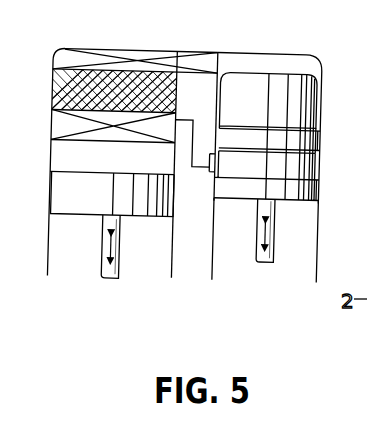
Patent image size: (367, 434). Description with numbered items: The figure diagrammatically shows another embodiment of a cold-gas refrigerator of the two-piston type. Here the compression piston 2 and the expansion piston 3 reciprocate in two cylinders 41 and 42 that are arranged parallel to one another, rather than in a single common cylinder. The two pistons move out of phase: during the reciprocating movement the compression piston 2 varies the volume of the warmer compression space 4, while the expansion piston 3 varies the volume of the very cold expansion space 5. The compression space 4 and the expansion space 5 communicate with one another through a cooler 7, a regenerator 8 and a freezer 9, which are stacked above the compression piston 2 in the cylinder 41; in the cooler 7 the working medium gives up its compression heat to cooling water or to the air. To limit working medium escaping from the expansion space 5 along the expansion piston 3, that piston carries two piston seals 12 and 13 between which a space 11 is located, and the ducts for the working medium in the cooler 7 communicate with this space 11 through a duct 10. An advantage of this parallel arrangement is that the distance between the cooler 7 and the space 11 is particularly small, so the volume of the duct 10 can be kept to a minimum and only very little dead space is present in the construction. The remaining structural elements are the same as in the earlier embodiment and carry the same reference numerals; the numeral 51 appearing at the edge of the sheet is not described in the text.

The compression piston 2 is at (65, 193).
The expansion piston 3 is at (295, 93).
The compression space 4 is at (119, 164).
The expansion space 5 is at (271, 62).
The cooler 7 is at (65, 123).
The regenerator 8 is at (72, 89).
The freezer 9 is at (68, 58).
The duct 10 is at (184, 143).
The space 11 is at (317, 163).
The piston seal 12 is at (317, 140).
The piston seal 13 is at (317, 185).
The cylinder 41 is at (50, 156).
The cylinder 42 is at (318, 213).
The member 51 is at (366, 372).